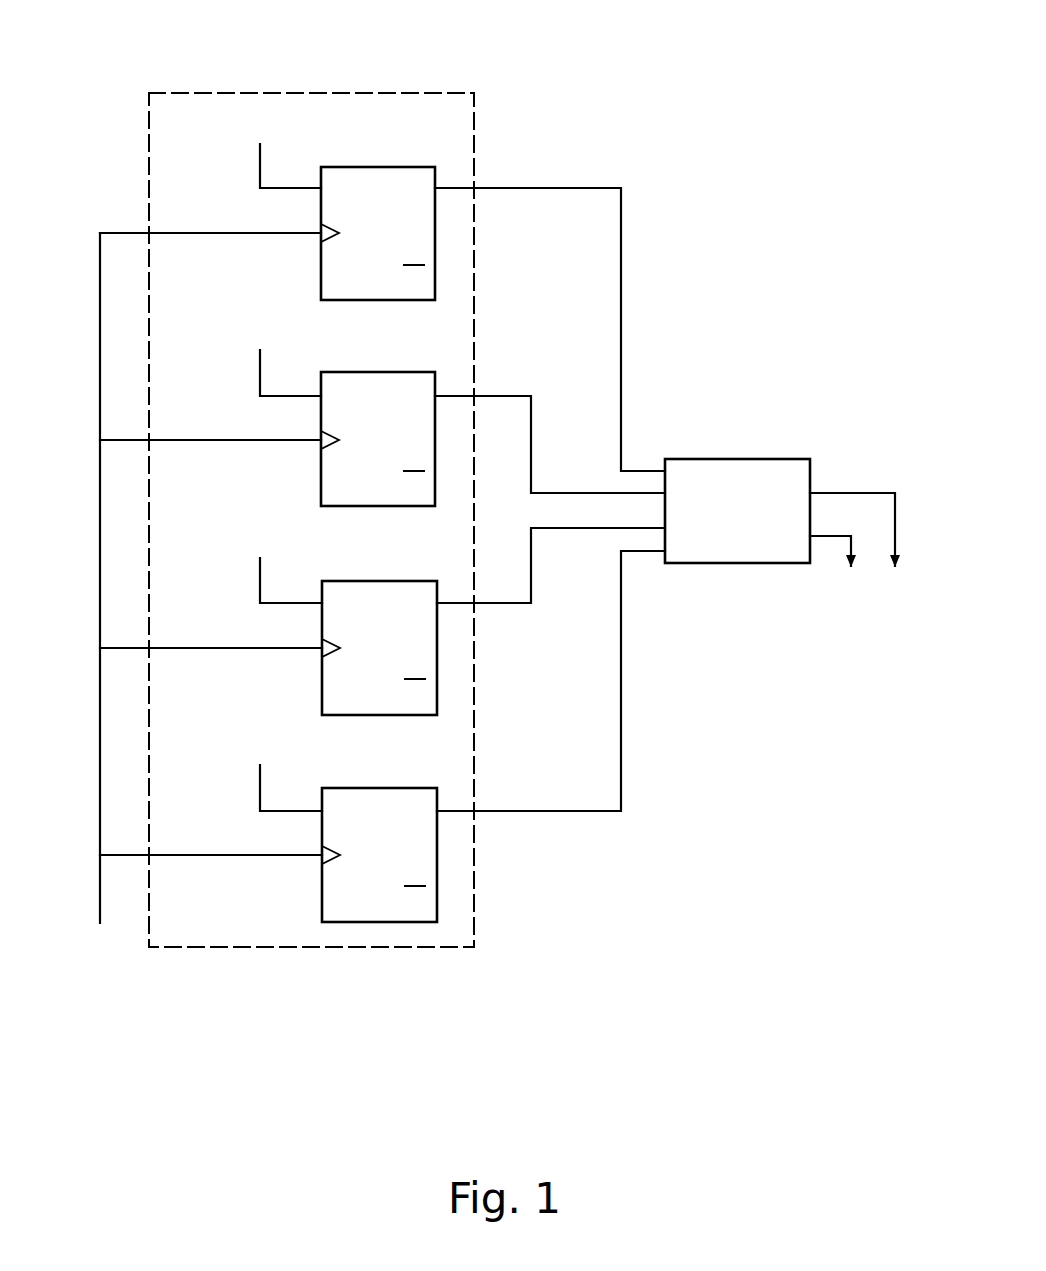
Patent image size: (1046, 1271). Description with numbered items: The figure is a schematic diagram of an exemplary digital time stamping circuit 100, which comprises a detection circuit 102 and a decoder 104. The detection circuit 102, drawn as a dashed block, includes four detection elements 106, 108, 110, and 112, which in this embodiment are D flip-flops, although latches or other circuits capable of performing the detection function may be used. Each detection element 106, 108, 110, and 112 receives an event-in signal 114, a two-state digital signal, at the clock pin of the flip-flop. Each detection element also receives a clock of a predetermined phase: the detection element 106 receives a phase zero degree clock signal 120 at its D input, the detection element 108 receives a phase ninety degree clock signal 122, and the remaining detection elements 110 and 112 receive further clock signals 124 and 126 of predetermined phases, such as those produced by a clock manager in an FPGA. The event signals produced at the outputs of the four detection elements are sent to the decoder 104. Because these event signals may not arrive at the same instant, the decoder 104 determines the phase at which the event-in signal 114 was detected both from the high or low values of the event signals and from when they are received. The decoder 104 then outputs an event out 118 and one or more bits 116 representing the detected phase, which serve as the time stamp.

The time stamping circuit 100 is at (781, 78).
The detection circuit 102 is at (149, 93).
The decoder circuit 104 is at (738, 459).
The detection element 106 is at (435, 167).
The detection element 108 is at (435, 372).
The detection element 110 is at (437, 715).
The detection element 112 is at (437, 922).
The event-in signal 114 is at (106, 1032).
The bit representing the phase 116 is at (830, 658).
The event out 118 is at (893, 703).
The phase 0° clock signal 120 is at (164, 130).
The phase 90° clock signal 122 is at (162, 336).
The clock signal 124 is at (160, 543).
The clock signal 126 is at (160, 747).